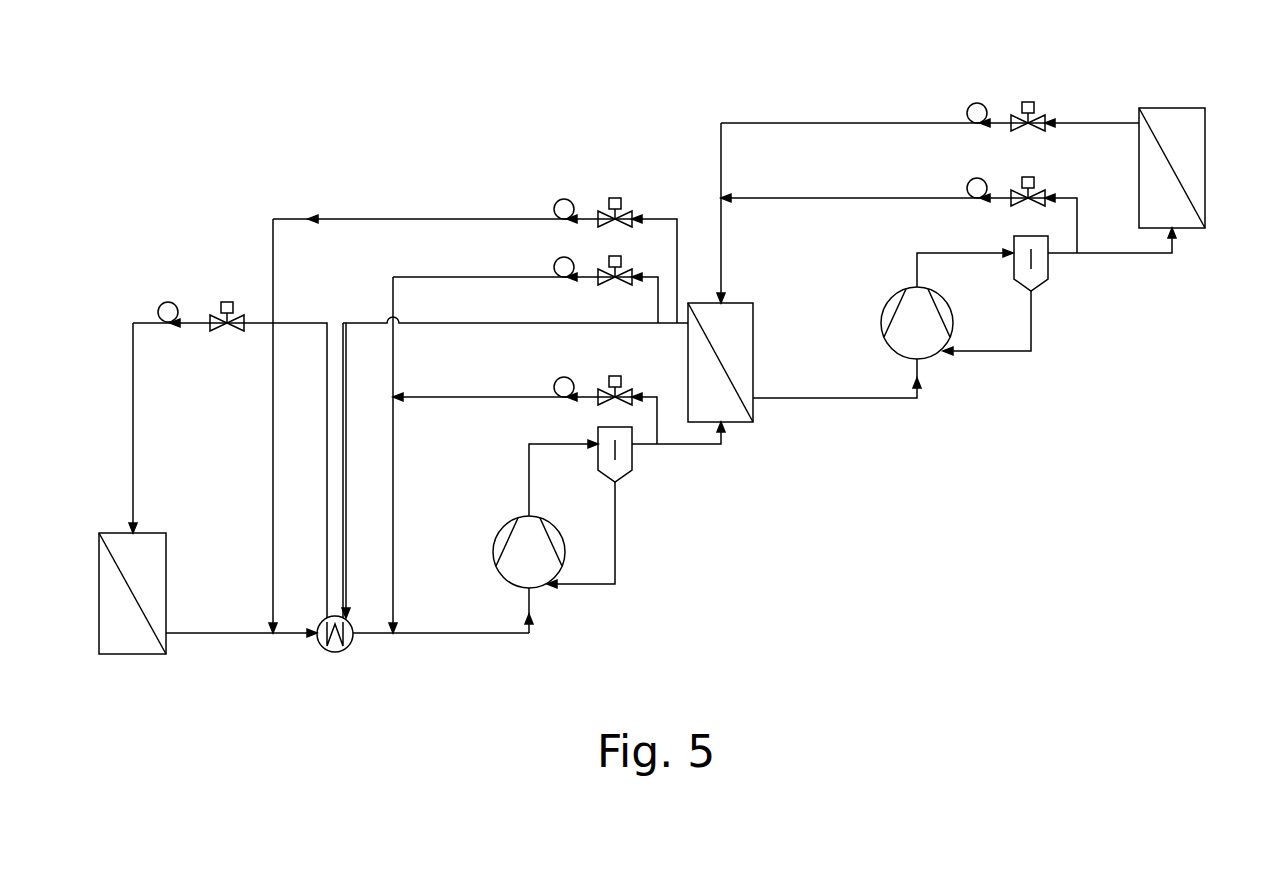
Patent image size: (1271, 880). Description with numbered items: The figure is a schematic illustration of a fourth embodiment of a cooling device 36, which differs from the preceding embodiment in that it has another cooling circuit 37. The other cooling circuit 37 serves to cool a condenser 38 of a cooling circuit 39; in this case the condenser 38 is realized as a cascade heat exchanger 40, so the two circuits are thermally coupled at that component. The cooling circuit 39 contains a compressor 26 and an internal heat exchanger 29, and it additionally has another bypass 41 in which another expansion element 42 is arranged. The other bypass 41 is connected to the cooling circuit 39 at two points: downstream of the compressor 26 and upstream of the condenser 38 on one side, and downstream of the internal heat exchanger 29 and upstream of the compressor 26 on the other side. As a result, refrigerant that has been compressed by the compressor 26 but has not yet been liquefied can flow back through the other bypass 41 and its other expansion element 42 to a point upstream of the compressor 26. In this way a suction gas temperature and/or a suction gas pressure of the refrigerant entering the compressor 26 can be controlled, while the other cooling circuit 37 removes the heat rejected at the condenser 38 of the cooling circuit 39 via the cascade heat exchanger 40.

The compressor 26 is at (538, 577).
The internal heat exchanger 29 is at (336, 652).
The cooling device 36 is at (205, 135).
The other cooling circuit 37 is at (890, 90).
The condenser 38 is at (738, 418).
The cooling circuit 39 is at (387, 210).
The cascade heat exchanger 40 is at (707, 288).
The other bypass 41 is at (423, 422).
The other expansion element 42 is at (600, 392).